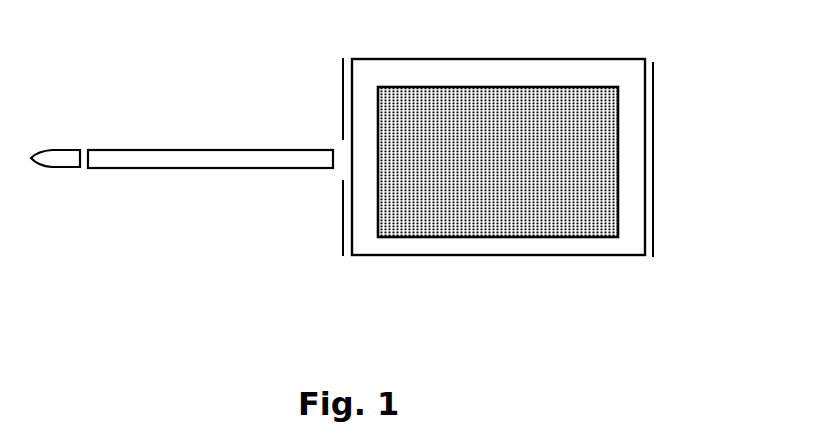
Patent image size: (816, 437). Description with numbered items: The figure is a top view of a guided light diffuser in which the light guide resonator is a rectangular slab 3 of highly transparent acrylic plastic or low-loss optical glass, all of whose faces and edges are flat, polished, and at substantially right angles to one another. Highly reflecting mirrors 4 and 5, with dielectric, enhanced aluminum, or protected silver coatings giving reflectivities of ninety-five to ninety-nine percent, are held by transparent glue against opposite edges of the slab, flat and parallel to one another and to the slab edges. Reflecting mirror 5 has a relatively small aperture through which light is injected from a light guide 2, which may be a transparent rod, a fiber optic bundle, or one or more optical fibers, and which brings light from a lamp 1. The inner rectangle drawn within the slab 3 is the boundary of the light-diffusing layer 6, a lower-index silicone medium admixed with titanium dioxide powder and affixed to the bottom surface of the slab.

The lamp 1 is at (61, 150).
The light guide 2 is at (142, 169).
The rectangular slab 3 is at (453, 59).
The highly reflecting mirror 4 is at (655, 98).
The highly reflecting mirror 5 is at (343, 78).
The light-diffusing layer 6 is at (468, 238).